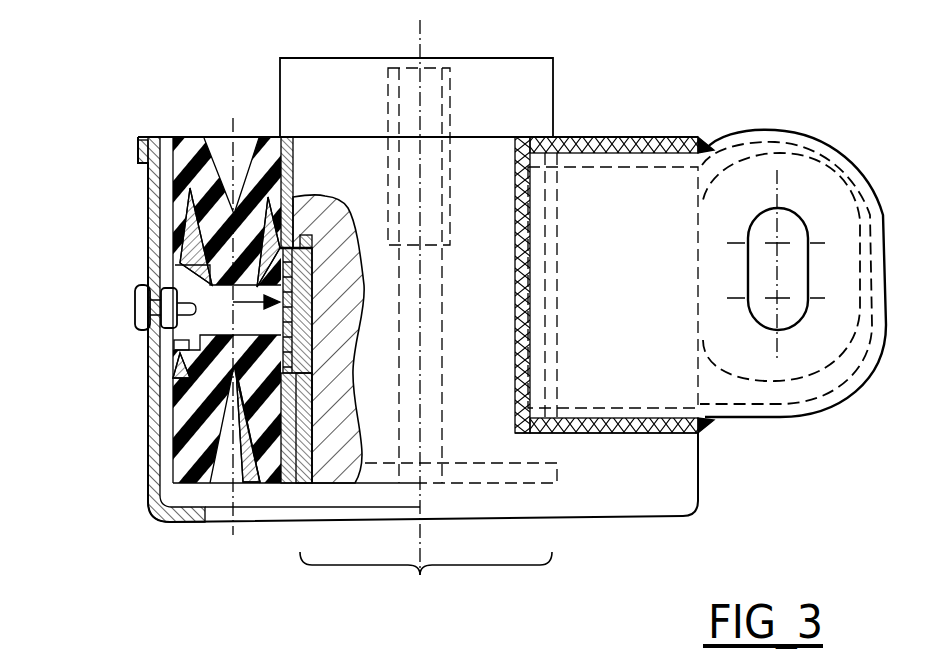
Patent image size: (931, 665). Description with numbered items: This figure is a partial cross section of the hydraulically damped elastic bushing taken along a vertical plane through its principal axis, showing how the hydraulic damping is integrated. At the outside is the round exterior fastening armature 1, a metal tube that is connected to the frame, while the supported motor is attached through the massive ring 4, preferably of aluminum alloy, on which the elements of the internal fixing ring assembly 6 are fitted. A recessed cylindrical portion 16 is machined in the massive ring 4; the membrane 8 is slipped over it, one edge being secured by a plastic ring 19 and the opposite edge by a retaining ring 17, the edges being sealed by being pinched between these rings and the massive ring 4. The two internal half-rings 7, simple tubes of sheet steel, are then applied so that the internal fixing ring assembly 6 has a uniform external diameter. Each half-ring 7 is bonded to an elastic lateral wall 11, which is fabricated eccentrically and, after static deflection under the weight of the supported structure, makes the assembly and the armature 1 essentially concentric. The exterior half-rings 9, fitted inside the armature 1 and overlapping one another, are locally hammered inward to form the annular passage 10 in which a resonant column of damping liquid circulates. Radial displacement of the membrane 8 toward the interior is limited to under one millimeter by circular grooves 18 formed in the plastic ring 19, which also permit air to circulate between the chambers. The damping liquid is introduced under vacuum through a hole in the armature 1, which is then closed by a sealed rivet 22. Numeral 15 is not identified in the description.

The round exterior fastening armature 1 is at (148, 492).
The massive ring 4 is at (340, 317).
The internal fixing ring assembly 6 is at (593, 372).
The half-ring 7 is at (293, 157).
The membrane 8 is at (152, 255).
The exterior half-ring 9 is at (170, 137).
The annular passage 10 is at (168, 357).
The elastic lateral wall 11 is at (193, 147).
The screw shaft 15 is at (138, 308).
The recessed cylindrical portion 16 is at (318, 232).
The retaining ring 17 is at (300, 440).
The circular grooves 18 is at (245, 400).
The plastic ring 19 is at (300, 348).
The sealed rivet 22 is at (137, 300).